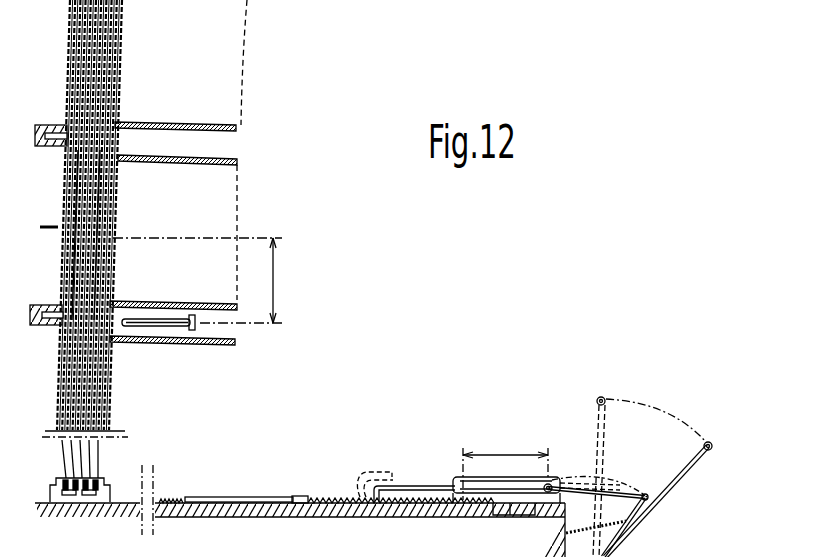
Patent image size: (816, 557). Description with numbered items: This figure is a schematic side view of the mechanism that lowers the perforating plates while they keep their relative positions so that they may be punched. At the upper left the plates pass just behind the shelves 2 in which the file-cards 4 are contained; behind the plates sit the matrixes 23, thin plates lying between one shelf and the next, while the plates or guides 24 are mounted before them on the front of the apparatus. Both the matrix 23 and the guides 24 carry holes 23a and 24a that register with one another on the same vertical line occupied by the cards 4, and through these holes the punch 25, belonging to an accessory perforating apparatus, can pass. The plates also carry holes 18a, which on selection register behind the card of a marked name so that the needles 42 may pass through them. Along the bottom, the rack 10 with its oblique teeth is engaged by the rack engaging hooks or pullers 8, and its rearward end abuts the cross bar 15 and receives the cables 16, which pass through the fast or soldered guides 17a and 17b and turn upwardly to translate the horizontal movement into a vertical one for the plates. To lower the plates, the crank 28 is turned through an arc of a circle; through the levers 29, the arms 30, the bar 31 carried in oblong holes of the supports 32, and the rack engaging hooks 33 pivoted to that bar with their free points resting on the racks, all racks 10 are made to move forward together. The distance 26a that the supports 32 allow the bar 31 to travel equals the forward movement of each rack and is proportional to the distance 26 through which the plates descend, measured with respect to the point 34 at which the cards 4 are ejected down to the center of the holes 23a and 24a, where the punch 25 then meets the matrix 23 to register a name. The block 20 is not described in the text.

The shelves 2 is at (238, 166).
The file-cards 4 is at (233, 66).
The rack engaging hooks or pullers 8 is at (362, 471).
The rack 10 is at (298, 500).
The cross bar 15 is at (178, 501).
The cables 16 is at (87, 448).
The guide 17a is at (85, 506).
The guide 17b is at (95, 479).
The holes 18a is at (78, 160).
The frame block 20 is at (558, 543).
The matrix 23 is at (48, 126).
The holes 23a is at (48, 146).
The guides 24 is at (173, 216).
The holes 24a is at (188, 143).
The punch 25 is at (174, 325).
The distance 26 is at (277, 280).
The distance 26a is at (505, 469).
The crank 28 is at (690, 477).
The levers 29 is at (637, 533).
The arms 30 is at (617, 495).
The bar 31 is at (555, 482).
The supports 32 is at (515, 477).
The rack engaging hooks 33 is at (420, 486).
The point 34 is at (115, 234).
The needles 42 is at (45, 226).